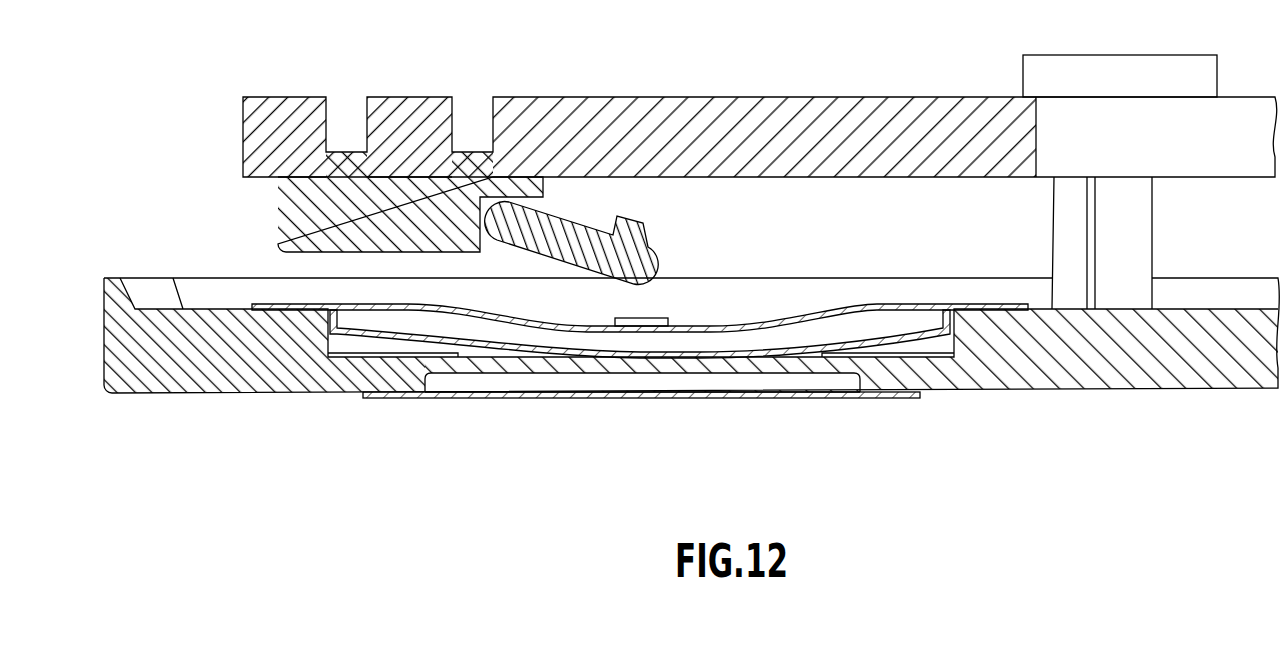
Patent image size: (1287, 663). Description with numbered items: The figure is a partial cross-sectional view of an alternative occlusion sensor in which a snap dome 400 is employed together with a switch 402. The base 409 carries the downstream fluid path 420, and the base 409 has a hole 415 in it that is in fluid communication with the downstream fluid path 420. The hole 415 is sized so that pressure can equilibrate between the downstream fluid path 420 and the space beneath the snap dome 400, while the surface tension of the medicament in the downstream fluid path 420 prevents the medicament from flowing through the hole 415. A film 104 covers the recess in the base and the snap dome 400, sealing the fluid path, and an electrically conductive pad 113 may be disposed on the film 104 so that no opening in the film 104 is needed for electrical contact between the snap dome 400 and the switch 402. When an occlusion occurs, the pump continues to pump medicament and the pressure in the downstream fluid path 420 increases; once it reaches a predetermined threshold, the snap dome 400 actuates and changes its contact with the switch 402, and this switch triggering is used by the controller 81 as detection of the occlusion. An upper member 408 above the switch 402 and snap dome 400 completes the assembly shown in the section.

The cover plate 408 is at (912, 102).
The controller 81 is at (1193, 55).
The switch 402 is at (278, 213).
The electrically conductive pad 113 is at (668, 318).
The film 104 is at (903, 303).
The base 409 is at (165, 385).
The snap dome 400 is at (390, 340).
The hole 415 is at (622, 378).
The downstream fluid path 420 is at (792, 380).